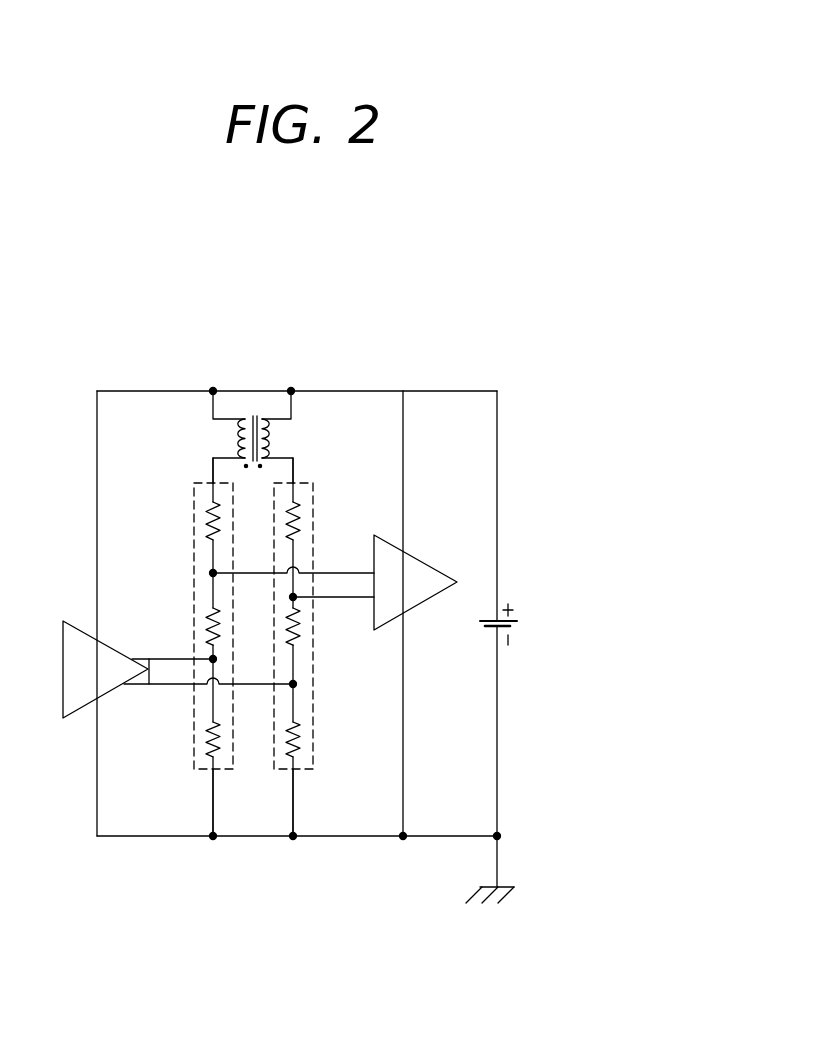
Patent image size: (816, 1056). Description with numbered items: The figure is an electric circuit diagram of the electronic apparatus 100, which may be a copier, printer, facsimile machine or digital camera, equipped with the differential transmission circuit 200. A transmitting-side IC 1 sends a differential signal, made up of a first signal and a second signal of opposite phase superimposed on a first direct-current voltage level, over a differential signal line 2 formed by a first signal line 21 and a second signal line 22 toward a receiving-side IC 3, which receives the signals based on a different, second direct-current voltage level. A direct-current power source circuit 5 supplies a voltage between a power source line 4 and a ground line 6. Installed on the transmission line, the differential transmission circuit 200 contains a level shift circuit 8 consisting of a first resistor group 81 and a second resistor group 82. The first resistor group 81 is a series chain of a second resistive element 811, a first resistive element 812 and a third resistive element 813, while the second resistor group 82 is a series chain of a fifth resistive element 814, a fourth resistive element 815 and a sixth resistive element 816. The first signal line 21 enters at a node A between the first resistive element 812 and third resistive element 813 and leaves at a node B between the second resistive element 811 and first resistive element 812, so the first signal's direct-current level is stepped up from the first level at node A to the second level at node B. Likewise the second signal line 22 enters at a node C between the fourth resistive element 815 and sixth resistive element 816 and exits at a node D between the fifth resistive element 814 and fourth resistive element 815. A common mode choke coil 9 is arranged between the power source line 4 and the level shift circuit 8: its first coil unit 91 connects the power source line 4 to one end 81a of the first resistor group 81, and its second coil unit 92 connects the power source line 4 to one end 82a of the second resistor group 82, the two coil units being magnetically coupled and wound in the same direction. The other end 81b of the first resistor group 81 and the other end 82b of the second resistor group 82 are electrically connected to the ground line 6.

The electronic apparatus 100 is at (372, 284).
The differential transmission circuit 200 is at (232, 376).
The transmitting-side IC 1 is at (63, 680).
The differential signal line 2 is at (52, 525).
The first signal line 21 is at (157, 658).
The second signal line 22 is at (148, 658).
The receiving-side IC 3 is at (427, 558).
The power source line 4 is at (146, 391).
The direct-current power source circuit 5 is at (518, 623).
The ground line 6 is at (122, 838).
The level shift circuit 8 is at (52, 423).
The first resistor group 81 is at (193, 487).
The second resistor group 82 is at (276, 488).
The one end of the first resistor group 81a is at (211, 466).
The another end of the first resistor group 81b is at (212, 785).
The one end of the second resistor group 82a is at (299, 470).
The another end of the second resistor group 82b is at (292, 785).
The second resistive element 811 is at (209, 520).
The first resistive element 812 is at (209, 574).
The third resistive element 813 is at (209, 742).
The fifth resistive element 814 is at (314, 518).
The fourth resistive element 815 is at (300, 628).
The sixth resistive element 816 is at (300, 739).
The common mode choke coil 9 is at (330, 352).
The first coil unit 91 is at (234, 437).
The second coil unit 92 is at (270, 437).
The node A is at (215, 658).
The node B is at (215, 570).
The node C is at (296, 686).
The node D is at (296, 596).